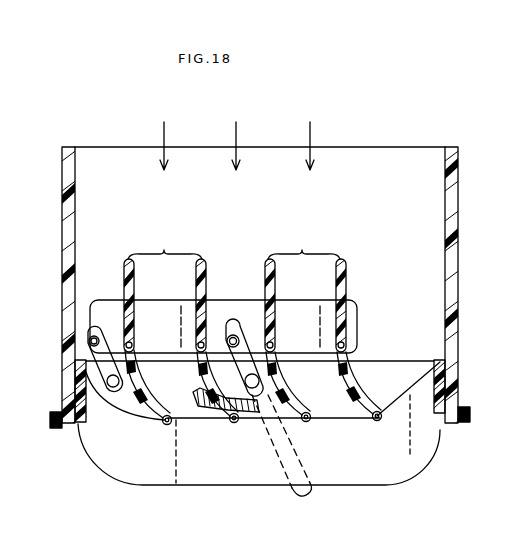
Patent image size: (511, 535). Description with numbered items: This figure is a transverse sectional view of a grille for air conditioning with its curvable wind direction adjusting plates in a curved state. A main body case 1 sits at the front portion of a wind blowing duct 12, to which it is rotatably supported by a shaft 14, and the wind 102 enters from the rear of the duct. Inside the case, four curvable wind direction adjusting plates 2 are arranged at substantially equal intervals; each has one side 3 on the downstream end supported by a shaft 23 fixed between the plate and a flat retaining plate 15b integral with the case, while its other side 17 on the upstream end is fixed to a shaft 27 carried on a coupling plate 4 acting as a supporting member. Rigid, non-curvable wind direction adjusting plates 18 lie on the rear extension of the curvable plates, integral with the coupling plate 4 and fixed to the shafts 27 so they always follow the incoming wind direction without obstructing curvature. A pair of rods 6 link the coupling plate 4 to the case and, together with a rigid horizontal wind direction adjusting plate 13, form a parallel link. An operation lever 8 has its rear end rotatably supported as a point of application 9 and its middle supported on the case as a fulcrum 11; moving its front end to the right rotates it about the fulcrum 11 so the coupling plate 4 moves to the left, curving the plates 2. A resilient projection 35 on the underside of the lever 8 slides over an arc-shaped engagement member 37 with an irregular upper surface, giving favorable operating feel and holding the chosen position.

The main body case 1 is at (78, 430).
The curvable wind direction adjusting plate 2 is at (142, 380).
The one side 3 is at (230, 422).
The coupling plate 4 is at (254, 301).
The rod 6 is at (110, 344).
The operation lever 8 is at (290, 493).
The point of application 9 is at (243, 342).
The fulcrum 11 is at (241, 380).
The wind blowing duct 12 is at (458, 186).
The wind direction adjusting plate 13 is at (194, 485).
The shaft 14 is at (75, 383).
The retaining plate 15b is at (348, 418).
The other side 17 is at (131, 304).
The wind direction adjusting plate 18 is at (234, 247).
The shaft 23 is at (162, 422).
The shaft 27 is at (186, 328).
The projection 35 is at (288, 418).
The engagement member 37 is at (208, 412).
The wind 102 is at (164, 138).